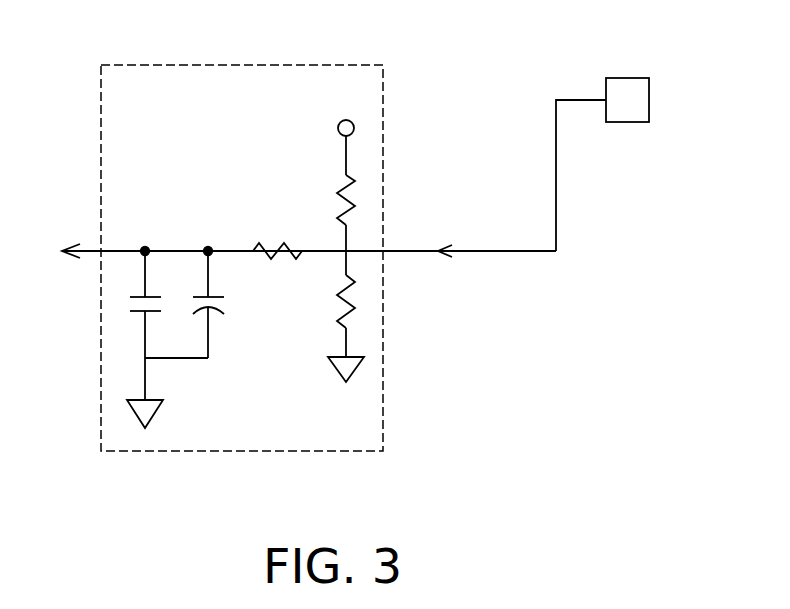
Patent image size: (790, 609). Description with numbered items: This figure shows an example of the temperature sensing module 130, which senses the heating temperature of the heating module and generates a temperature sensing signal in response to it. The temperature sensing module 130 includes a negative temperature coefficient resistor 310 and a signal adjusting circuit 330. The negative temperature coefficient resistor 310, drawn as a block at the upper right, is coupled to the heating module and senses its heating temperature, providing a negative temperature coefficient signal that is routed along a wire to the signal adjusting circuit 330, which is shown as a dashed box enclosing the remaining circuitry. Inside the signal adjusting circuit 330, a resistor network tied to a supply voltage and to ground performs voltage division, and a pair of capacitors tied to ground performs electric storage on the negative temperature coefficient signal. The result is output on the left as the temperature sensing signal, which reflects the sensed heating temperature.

The temperature sensing module 130 is at (747, 537).
The negative temperature coefficient resistor 310 is at (630, 78).
The signal adjusting circuit 330 is at (208, 65).